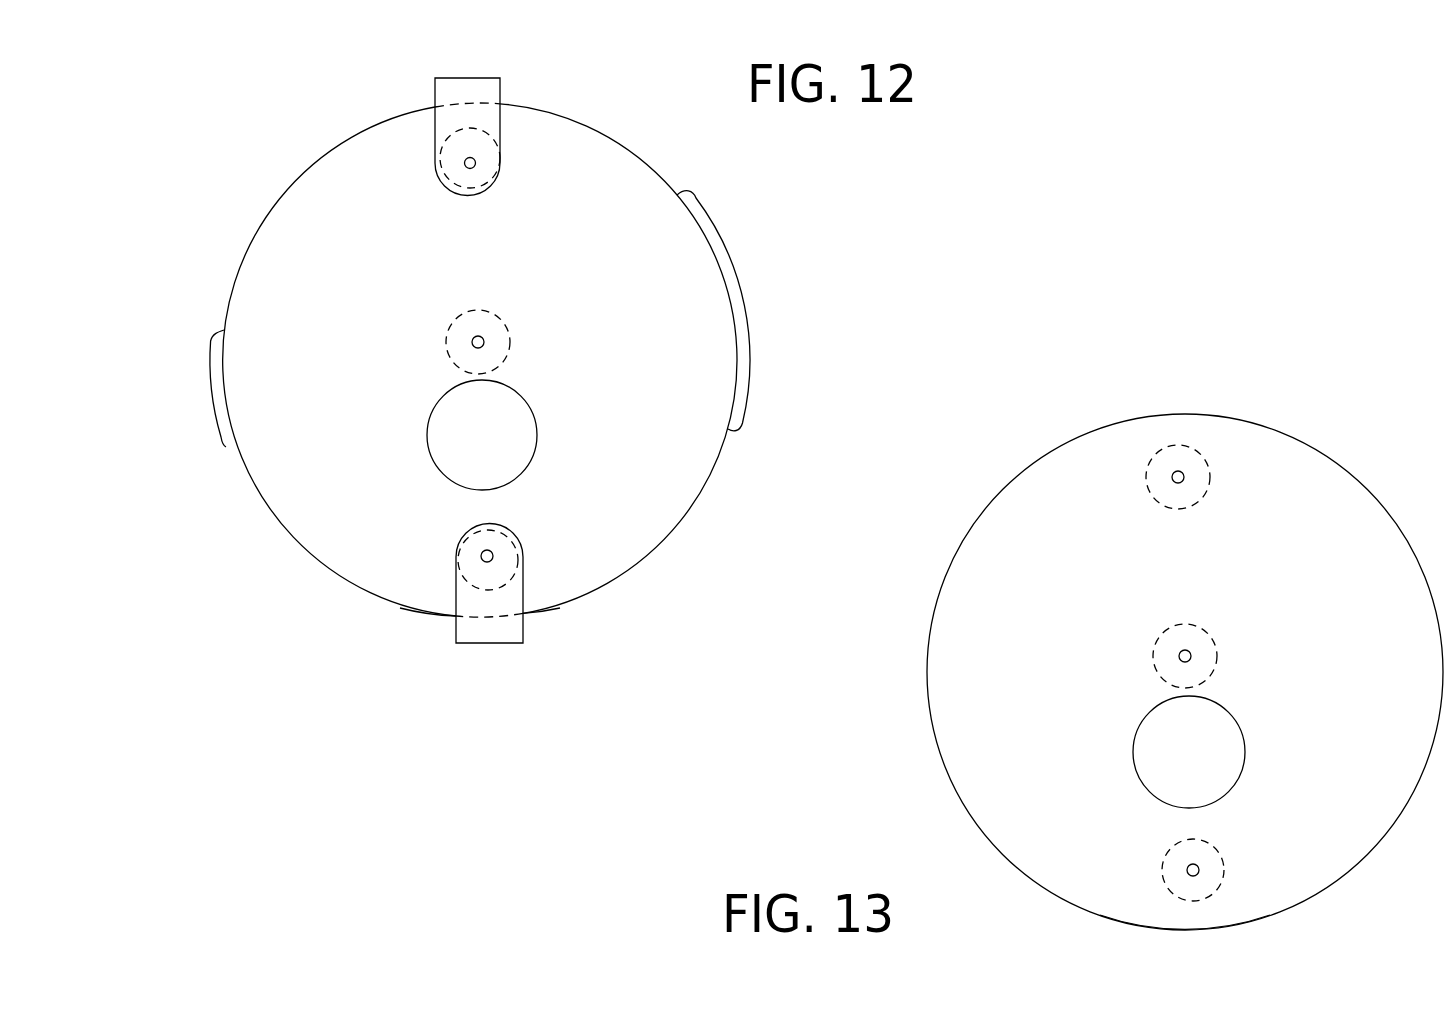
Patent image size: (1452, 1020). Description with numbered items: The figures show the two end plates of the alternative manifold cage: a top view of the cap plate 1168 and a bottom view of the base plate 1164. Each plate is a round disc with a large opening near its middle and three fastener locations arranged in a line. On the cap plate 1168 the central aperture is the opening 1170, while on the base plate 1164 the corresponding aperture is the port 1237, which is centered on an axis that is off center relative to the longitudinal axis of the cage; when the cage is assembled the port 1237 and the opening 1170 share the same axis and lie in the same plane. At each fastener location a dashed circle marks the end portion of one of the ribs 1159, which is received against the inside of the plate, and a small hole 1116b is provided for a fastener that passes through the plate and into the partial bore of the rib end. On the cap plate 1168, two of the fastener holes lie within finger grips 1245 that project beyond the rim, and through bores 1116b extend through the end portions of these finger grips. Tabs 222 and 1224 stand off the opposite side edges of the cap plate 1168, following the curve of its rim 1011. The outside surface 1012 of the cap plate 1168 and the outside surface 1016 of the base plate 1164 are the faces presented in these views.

In FIG. 12, the cap plate 1168 is at (256, 180).
In FIG. 13, the base plate 1164 is at (983, 493).
In FIG. 12, the ribs 1159 is at (457, 138).
In FIG. 13, the ribs 1159 is at (1163, 455).
In FIG. 12, the fastener hole 1116b is at (478, 165).
In FIG. 13, the fastener hole 1116b is at (1185, 477).
In FIG. 12, the mounting tab 1245 is at (490, 150).
In FIG. 12, the side tab 222 is at (703, 213).
In FIG. 12, the side tab 1224 is at (210, 372).
In FIG. 12, the end plate 1012 is at (308, 432).
In FIG. 12, the end plate outer edge 1011 is at (318, 530).
In FIG. 12, the opening 1170 is at (450, 473).
In FIG. 13, the end plate 1016 is at (1016, 748).
In FIG. 13, the port 1237 is at (1153, 787).